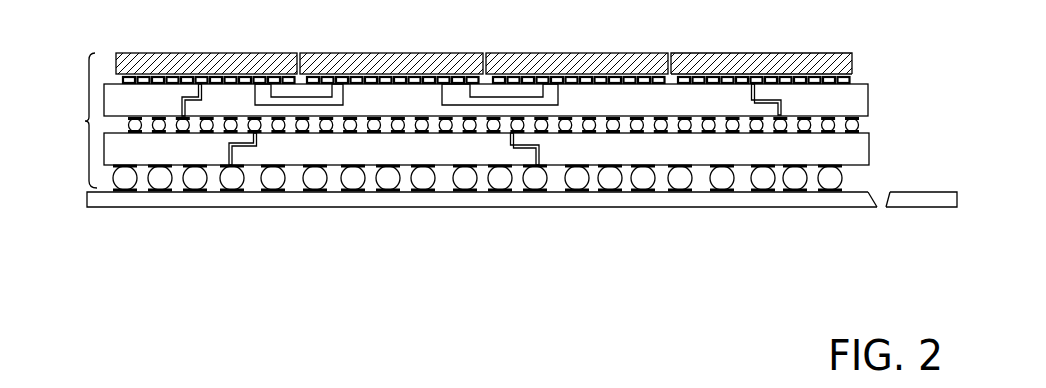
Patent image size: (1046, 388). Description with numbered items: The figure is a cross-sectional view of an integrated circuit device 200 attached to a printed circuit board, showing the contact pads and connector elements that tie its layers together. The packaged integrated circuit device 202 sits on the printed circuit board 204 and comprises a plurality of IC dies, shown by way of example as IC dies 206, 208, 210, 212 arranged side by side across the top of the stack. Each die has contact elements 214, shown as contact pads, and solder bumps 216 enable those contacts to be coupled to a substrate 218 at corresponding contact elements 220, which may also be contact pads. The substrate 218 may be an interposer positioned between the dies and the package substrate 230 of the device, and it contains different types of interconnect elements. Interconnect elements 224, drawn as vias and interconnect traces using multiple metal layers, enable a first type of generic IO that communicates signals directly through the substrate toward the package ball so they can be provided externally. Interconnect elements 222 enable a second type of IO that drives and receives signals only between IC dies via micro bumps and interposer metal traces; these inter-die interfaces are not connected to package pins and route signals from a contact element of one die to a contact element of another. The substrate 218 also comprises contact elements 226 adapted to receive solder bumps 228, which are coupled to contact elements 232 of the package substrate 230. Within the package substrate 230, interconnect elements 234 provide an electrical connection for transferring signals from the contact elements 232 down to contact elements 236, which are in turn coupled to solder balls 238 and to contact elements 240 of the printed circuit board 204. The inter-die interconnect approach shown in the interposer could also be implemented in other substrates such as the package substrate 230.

The integrated circuit device 200 is at (504, 148).
The integrated circuit device 202 is at (504, 124).
The printed circuit board 204 is at (524, 193).
The IC die 206 is at (262, 50).
The IC die 208 is at (441, 50).
The IC die 210 is at (620, 50).
The IC die 212 is at (792, 40).
The contact elements 214 is at (850, 58).
The solder bumps 216 is at (845, 73).
The substrate 218 is at (868, 103).
The contact elements 220 is at (848, 82).
The interconnect elements 222 is at (343, 98).
The interconnect elements 224 is at (183, 106).
The contact elements 226 is at (855, 126).
The solder bumps 228 is at (867, 152).
The package substrate 230 is at (874, 203).
The contact elements 232 is at (517, 189).
The interconnect elements 234 is at (228, 162).
The contact elements 236 is at (412, 165).
The solder balls 238 is at (436, 170).
The contact elements 240 is at (417, 196).